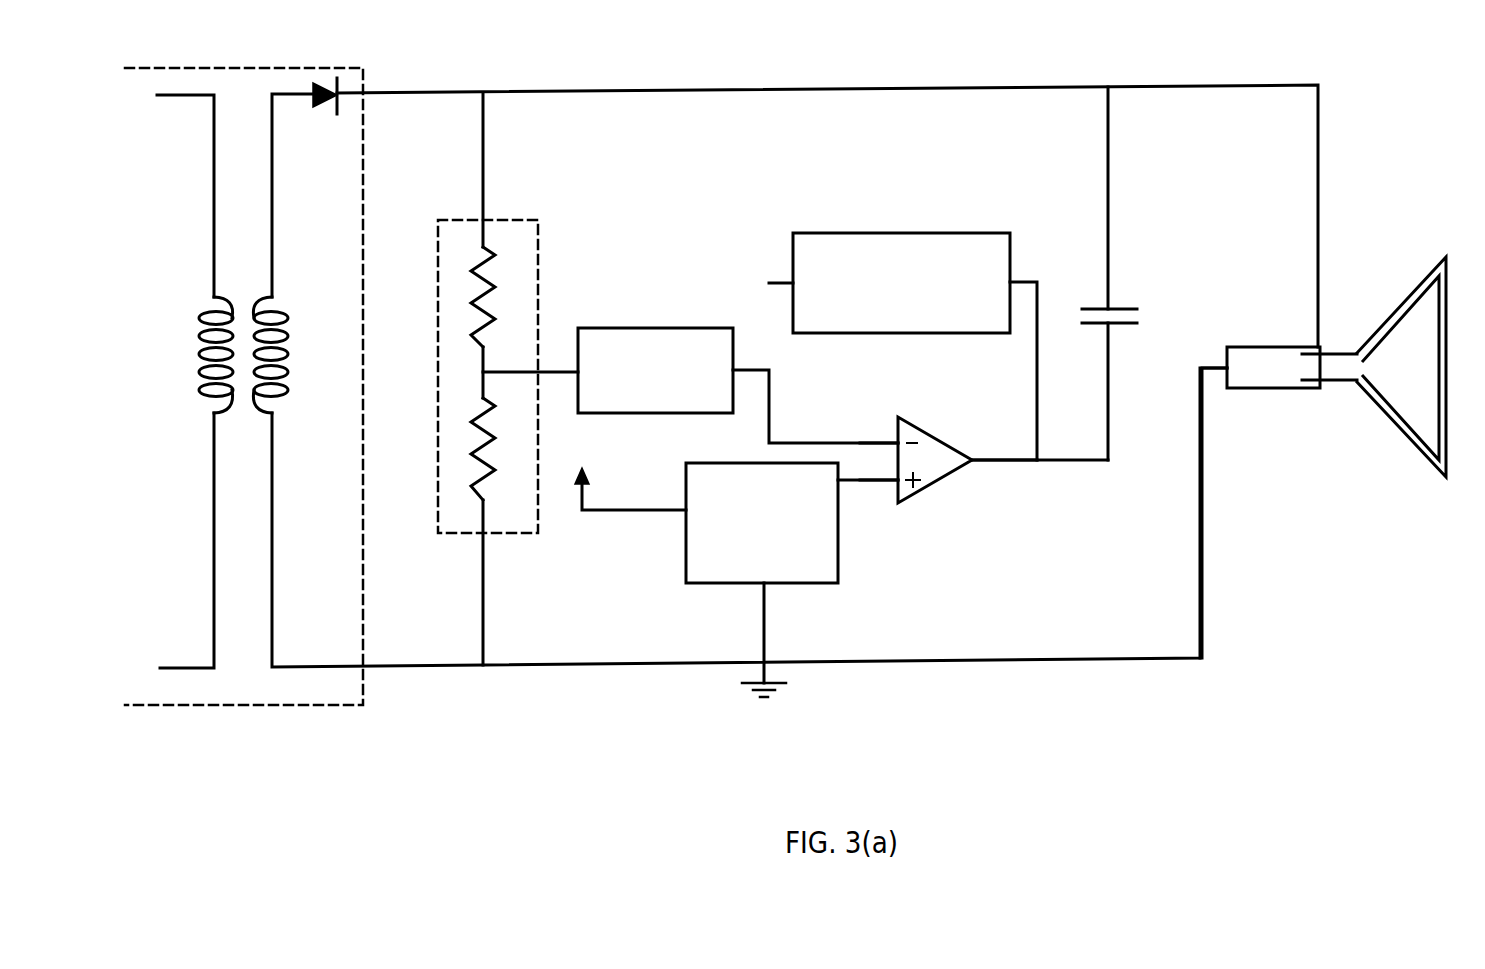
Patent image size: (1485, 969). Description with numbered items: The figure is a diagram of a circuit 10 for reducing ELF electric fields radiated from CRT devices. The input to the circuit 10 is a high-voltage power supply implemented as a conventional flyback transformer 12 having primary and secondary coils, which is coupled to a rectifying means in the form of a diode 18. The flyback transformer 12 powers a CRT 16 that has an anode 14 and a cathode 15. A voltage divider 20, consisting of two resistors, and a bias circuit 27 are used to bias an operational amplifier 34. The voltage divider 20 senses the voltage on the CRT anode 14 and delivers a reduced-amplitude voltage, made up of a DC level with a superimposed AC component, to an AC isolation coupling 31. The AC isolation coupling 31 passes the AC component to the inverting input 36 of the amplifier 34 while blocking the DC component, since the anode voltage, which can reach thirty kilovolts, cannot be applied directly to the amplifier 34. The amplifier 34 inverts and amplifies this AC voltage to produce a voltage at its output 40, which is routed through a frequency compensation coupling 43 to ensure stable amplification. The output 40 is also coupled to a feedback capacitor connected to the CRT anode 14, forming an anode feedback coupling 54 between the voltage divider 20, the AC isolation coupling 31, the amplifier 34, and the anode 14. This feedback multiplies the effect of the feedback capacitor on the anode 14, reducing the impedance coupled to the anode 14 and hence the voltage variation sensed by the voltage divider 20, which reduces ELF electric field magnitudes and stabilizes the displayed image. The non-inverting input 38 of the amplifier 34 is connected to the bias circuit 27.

The circuit 10 is at (420, 745).
The flyback transformer 12 is at (362, 68).
The anode 14 is at (1318, 345).
The cathode 15 is at (1212, 366).
The CRT 16 is at (1388, 428).
The diode 18 is at (312, 100).
The voltage divider 20 is at (497, 220).
The bias circuit 27 is at (686, 566).
The AC isolation coupling 31 is at (633, 328).
The operational amplifier 34 is at (930, 485).
The inverting input 36 is at (888, 440).
The non-inverting input 38 is at (898, 482).
The output 40 is at (1002, 462).
The frequency compensation coupling 43 is at (862, 233).
The anode feedback coupling 54 is at (1109, 166).